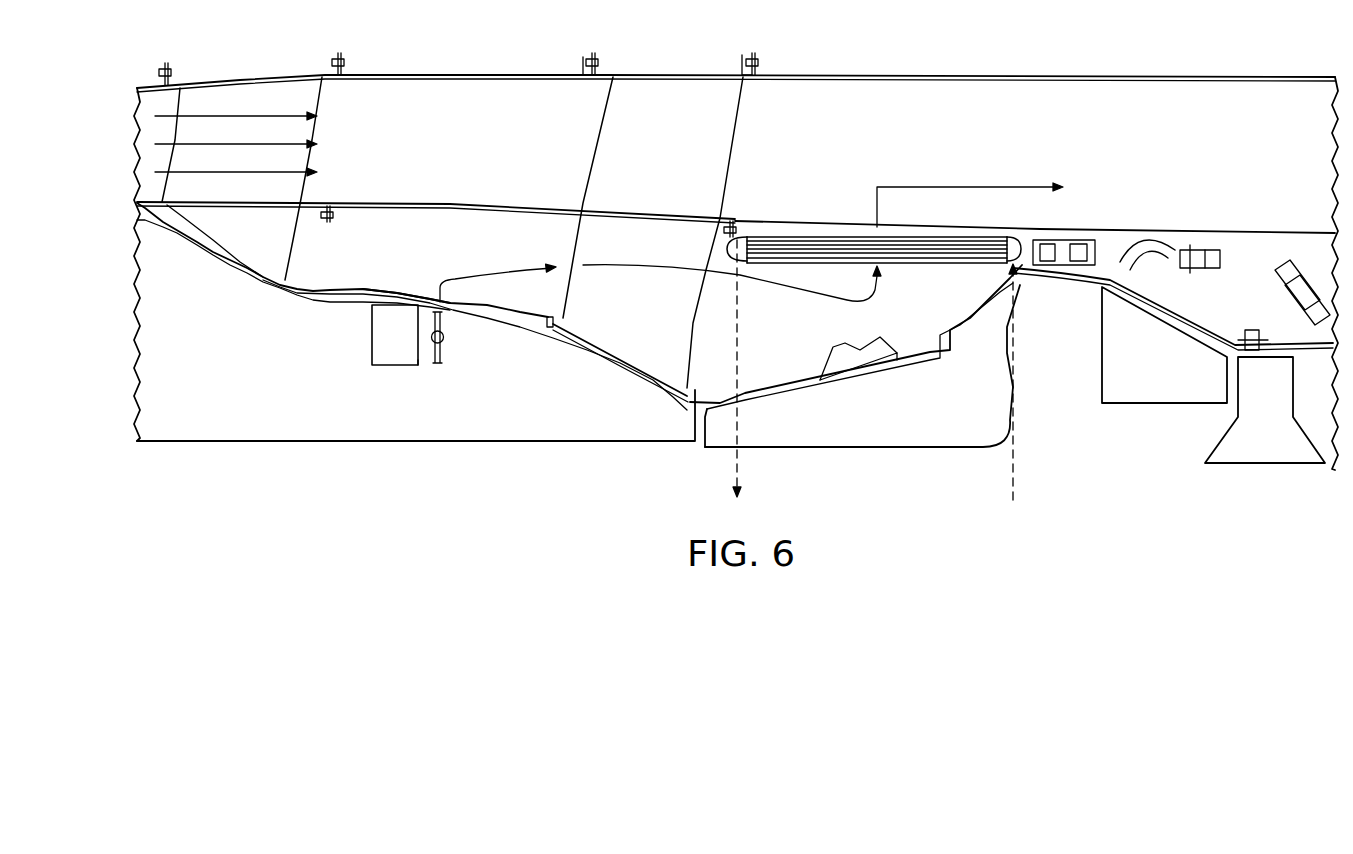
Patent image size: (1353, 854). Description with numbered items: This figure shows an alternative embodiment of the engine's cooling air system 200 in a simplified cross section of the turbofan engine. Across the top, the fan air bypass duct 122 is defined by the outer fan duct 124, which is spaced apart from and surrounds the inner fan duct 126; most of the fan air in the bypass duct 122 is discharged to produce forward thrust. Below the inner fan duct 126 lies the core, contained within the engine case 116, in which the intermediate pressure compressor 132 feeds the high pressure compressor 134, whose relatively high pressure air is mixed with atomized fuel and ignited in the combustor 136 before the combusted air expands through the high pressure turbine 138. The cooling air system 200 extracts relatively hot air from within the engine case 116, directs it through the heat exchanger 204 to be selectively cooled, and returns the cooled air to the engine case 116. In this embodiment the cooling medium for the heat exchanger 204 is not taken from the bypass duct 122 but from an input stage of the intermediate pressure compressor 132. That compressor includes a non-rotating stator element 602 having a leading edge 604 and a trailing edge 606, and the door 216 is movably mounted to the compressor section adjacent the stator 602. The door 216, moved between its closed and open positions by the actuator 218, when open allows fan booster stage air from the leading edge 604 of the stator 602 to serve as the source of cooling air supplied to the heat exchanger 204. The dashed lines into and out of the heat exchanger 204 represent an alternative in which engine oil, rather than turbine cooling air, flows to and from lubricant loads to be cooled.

The engine case 116 is at (622, 363).
The fan air bypass duct 122 is at (492, 125).
The outer fan duct 124 is at (915, 76).
The inner fan duct 126 is at (619, 207).
The intermediate pressure compressor 132 is at (412, 442).
The high pressure compressor 134 is at (860, 448).
The combustor 136 is at (1163, 404).
The high pressure turbine 138 is at (1265, 464).
The cooling air system 200 is at (845, 200).
The heat exchanger 204 is at (800, 240).
The door 216 is at (442, 360).
The actuator 218 is at (445, 337).
The stator element 602 is at (397, 305).
The leading edge 604 is at (372, 336).
The trailing edge 606 is at (418, 365).